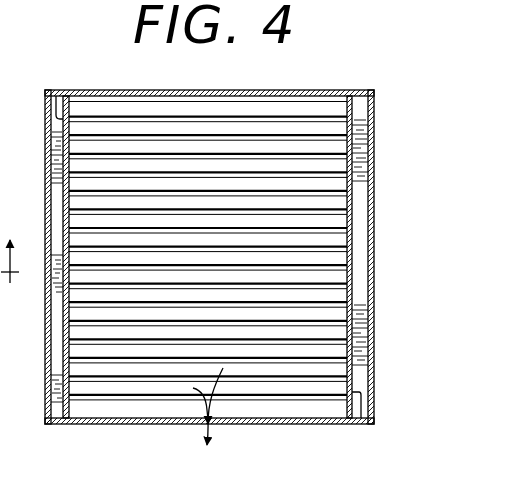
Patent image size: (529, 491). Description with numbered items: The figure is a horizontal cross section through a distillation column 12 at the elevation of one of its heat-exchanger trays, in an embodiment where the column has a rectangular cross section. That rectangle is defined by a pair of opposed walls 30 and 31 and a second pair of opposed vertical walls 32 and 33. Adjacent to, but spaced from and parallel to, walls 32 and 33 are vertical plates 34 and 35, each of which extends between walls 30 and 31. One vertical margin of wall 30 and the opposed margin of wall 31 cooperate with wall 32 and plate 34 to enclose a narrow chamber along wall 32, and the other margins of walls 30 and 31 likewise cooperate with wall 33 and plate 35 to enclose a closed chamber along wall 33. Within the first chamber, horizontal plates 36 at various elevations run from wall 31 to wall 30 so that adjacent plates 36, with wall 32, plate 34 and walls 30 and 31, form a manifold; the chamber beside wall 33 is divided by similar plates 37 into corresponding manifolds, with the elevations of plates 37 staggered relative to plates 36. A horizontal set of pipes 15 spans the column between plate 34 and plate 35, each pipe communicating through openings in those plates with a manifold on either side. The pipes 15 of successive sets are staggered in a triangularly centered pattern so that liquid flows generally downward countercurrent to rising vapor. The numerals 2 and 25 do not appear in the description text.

The column 12 is at (322, 79).
The wall 30 is at (191, 67).
The wall 31 is at (101, 426).
The wall 32 is at (45, 399).
The wall 33 is at (372, 217).
The plate 34 is at (57, 91).
The plate 35 is at (360, 420).
The horizontal plates 36 is at (58, 346).
The plates 37 is at (357, 291).
The pipes 15 is at (216, 414).
The direction arrow 2 is at (9, 278).
The side wall 25 is at (7, 153).